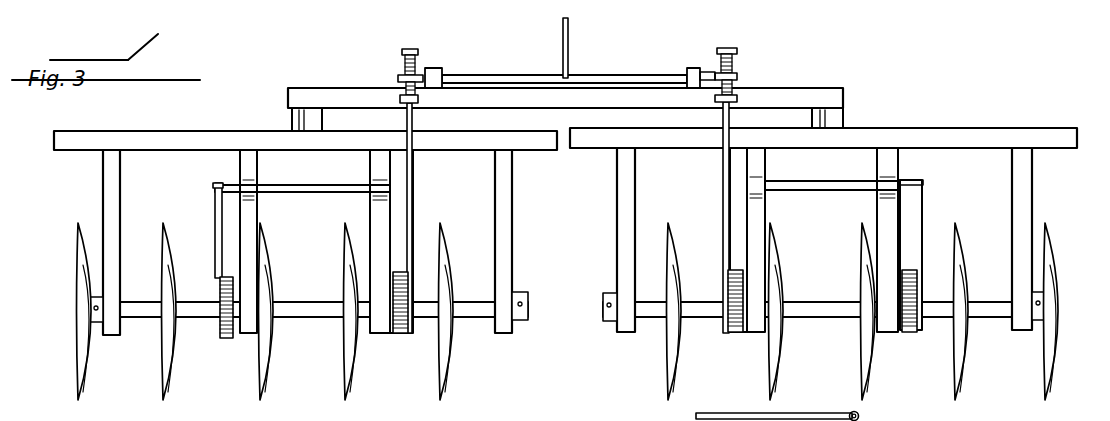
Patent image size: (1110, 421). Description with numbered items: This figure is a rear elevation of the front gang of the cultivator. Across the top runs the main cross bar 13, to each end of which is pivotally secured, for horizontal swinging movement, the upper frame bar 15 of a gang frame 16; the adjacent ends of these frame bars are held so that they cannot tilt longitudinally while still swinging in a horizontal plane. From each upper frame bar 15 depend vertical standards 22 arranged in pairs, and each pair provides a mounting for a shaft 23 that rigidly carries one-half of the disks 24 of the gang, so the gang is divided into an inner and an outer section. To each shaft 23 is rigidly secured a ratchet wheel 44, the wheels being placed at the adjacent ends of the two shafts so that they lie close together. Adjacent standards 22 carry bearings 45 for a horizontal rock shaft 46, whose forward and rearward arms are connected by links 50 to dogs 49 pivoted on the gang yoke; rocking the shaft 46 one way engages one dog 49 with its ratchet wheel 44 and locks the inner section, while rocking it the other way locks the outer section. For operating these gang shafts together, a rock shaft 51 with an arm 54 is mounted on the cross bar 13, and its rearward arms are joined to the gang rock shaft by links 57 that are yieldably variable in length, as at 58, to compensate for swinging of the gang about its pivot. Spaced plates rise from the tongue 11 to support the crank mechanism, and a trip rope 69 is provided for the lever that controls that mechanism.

The tongue 11 is at (232, 378).
The cross bar 13 is at (843, 93).
The upper frame bar 15 is at (197, 134).
The gang frame 16 is at (1020, 346).
The vertical standards 22 is at (103, 178).
The shaft 23 is at (212, 320).
The disks 24 is at (164, 342).
The ratchet wheel 44 is at (227, 338).
The bearings 45 is at (257, 185).
The rock shaft 46 is at (340, 190).
The dogs 49 is at (232, 293).
The links 50 is at (216, 215).
The rock shaft 51 is at (497, 75).
The arm 54 is at (569, 33).
The links 57 is at (413, 162).
The yieldable length adjustment 58 is at (404, 63).
The trip rope 69 is at (746, 406).